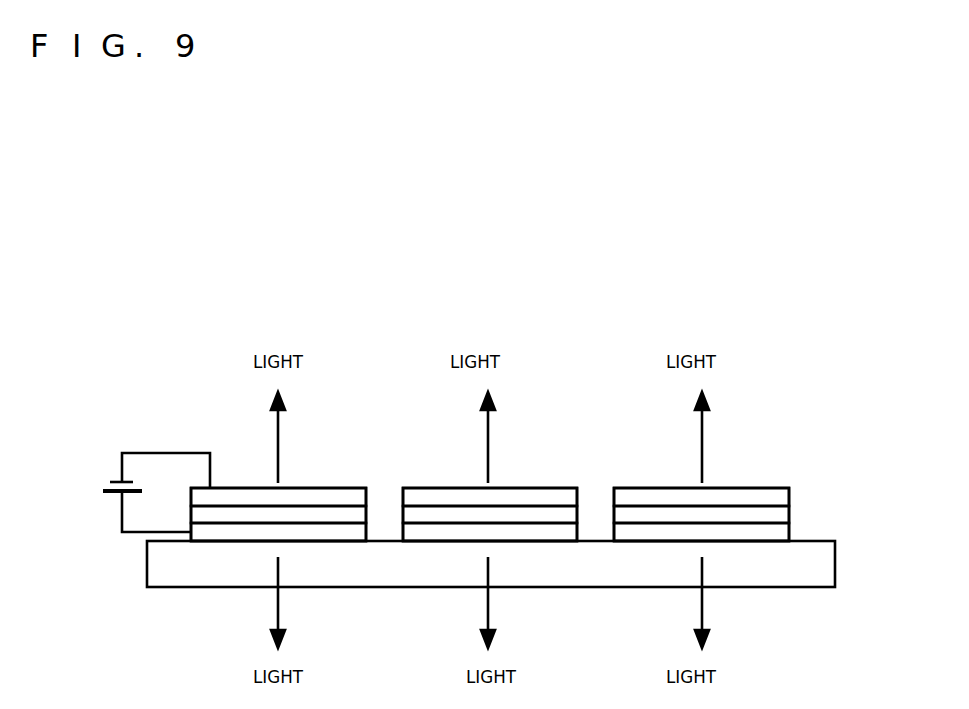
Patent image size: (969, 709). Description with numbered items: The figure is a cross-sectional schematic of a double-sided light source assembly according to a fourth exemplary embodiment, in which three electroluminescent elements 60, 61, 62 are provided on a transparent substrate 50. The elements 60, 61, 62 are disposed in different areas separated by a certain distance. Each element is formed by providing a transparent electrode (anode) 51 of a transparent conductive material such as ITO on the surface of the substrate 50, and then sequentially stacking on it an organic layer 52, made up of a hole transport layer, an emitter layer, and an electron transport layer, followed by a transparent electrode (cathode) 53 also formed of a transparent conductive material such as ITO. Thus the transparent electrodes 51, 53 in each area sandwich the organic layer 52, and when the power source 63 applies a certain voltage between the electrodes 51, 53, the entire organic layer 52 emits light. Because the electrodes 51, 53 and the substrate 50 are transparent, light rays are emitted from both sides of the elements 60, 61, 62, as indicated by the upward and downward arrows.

The transparent substrate 50 is at (805, 578).
The transparent electrode (anode) 51 is at (789, 531).
The organic layer 52 is at (789, 514).
The transparent electrode (cathode) 53 is at (789, 492).
The electroluminescent element 60 is at (746, 472).
The electroluminescent element 61 is at (524, 472).
The electroluminescent element 62 is at (306, 472).
The power source 63 is at (115, 498).